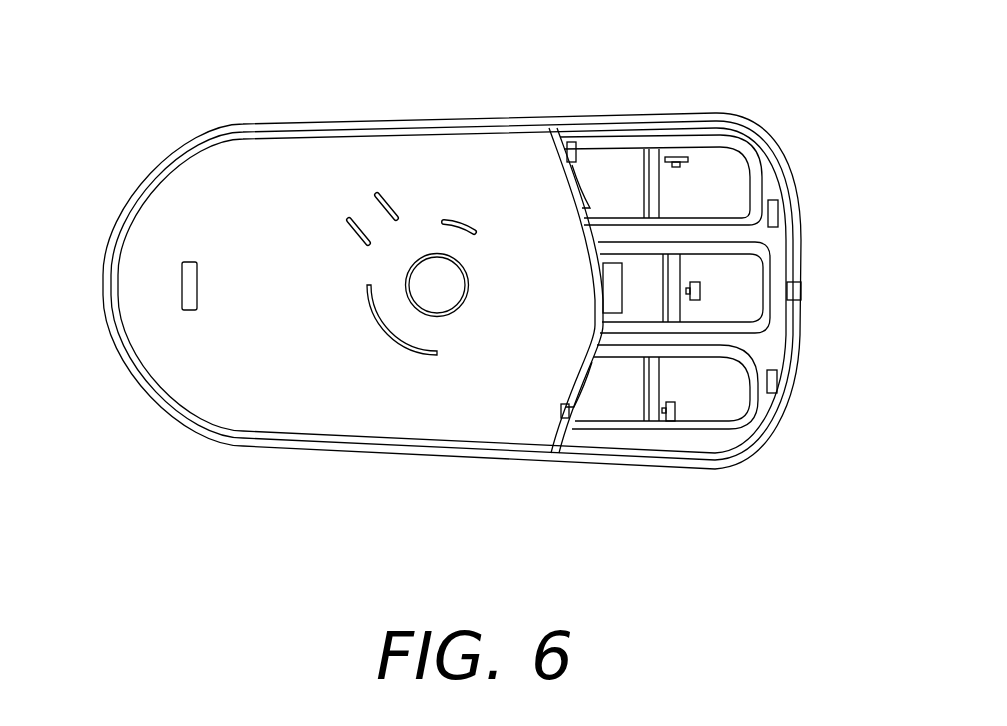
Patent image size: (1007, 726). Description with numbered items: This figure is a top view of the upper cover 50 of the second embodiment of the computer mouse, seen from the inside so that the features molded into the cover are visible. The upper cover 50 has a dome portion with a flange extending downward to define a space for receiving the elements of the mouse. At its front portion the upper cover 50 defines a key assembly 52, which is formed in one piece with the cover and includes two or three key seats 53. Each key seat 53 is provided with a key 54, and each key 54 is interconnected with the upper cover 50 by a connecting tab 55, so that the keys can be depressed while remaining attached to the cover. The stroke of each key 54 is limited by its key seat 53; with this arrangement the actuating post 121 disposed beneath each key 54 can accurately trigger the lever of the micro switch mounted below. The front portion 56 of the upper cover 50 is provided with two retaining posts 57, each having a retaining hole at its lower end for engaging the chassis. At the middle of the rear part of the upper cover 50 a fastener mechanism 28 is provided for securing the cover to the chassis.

The upper cover 50 is at (441, 104).
The fastener mechanism 28 is at (187, 280).
The key assembly 52 is at (733, 289).
The key seat 53 is at (703, 140).
The key 54 is at (736, 192).
The connecting tab 55 is at (574, 160).
The front portion 56 is at (767, 430).
The retaining post 57 is at (777, 217).
The actuating post 121 is at (670, 410).